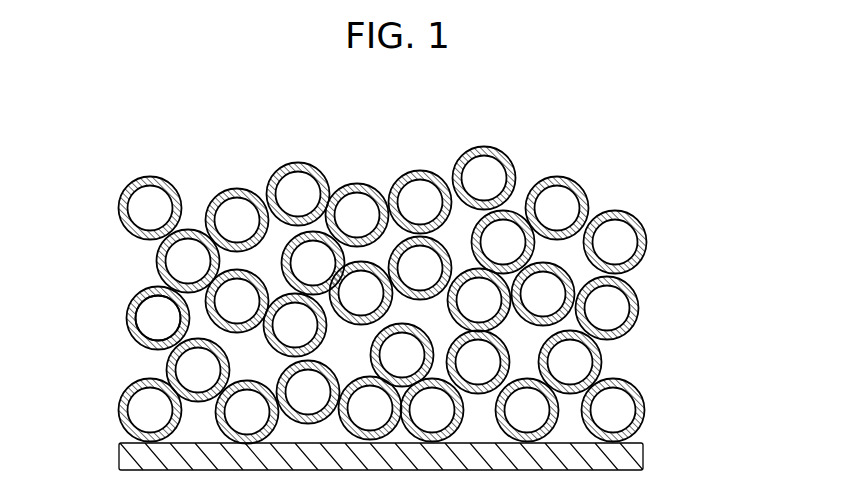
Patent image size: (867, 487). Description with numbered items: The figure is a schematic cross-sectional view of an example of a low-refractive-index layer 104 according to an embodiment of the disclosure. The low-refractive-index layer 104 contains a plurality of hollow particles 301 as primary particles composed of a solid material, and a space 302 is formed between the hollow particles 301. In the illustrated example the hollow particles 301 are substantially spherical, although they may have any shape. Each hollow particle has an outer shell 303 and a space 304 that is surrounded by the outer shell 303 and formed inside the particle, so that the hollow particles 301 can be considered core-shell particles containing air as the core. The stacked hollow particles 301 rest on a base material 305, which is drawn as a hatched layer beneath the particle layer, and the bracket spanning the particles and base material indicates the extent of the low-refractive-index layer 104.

The low-refractive-index layer 104 is at (423, 311).
The hollow particle 301 is at (385, 295).
The space 302 is at (558, 252).
The outer shell 303 is at (115, 319).
The space 304 is at (157, 315).
The base material 305 is at (412, 454).